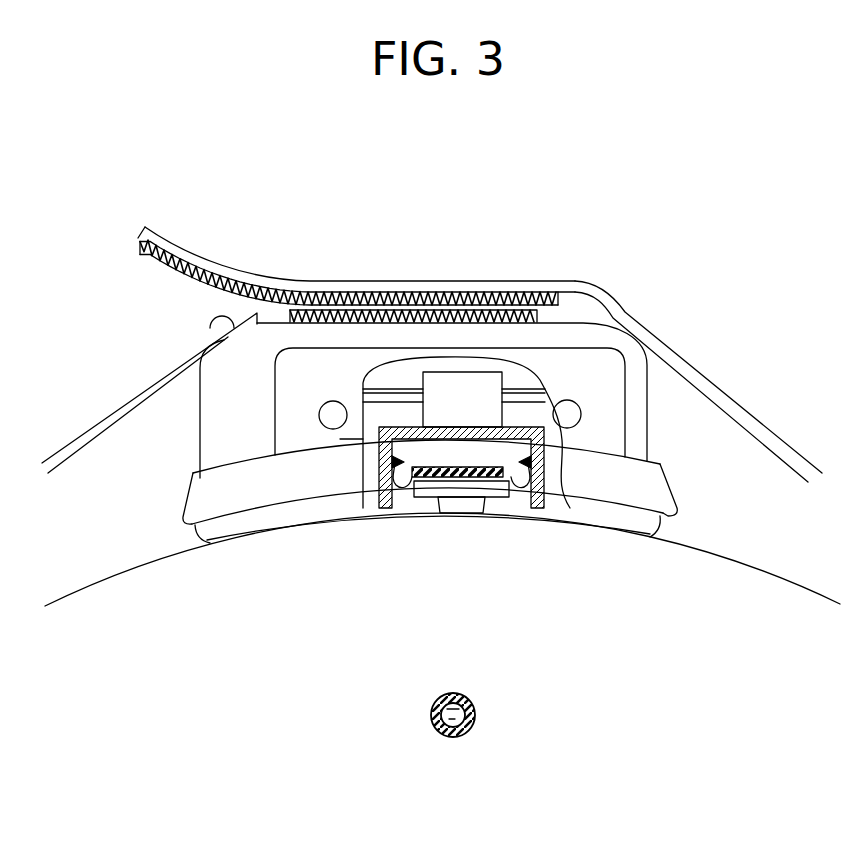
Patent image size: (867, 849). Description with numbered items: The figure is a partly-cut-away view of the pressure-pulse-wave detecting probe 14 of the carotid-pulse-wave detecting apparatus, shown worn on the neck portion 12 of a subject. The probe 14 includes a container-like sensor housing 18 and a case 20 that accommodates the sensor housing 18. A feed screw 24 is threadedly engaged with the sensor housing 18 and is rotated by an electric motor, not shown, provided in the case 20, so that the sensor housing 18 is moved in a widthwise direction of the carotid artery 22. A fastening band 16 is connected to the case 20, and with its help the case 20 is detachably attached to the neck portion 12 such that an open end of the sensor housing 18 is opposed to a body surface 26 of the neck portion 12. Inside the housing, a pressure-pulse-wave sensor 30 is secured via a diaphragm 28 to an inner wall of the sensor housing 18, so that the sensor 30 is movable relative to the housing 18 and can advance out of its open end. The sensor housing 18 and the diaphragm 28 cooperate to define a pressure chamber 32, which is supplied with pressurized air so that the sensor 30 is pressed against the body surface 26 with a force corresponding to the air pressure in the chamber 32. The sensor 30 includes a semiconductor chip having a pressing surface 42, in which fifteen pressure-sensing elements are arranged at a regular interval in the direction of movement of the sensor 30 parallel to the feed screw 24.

The neck portion 12 is at (152, 580).
The pressure-pulse-wave detecting probe 14 is at (108, 226).
The fastening band 16 is at (112, 415).
The sensor housing 18 is at (547, 440).
The case 20 is at (583, 332).
The carotid artery 22 is at (452, 746).
The feed screw 24 is at (565, 368).
The body surface 26 is at (713, 547).
The diaphragm 28 is at (522, 500).
The pressure-pulse-wave sensor 30 is at (435, 485).
The pressure chamber 32 is at (503, 464).
The pressing surface 42 is at (457, 513).